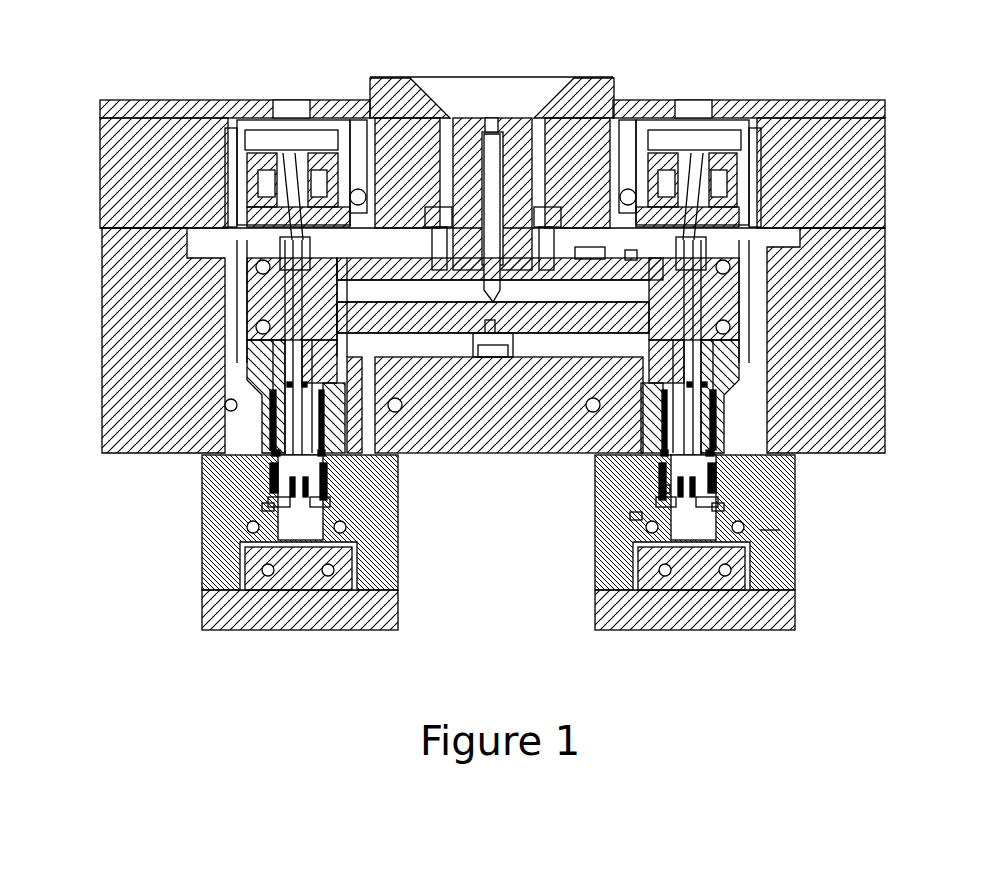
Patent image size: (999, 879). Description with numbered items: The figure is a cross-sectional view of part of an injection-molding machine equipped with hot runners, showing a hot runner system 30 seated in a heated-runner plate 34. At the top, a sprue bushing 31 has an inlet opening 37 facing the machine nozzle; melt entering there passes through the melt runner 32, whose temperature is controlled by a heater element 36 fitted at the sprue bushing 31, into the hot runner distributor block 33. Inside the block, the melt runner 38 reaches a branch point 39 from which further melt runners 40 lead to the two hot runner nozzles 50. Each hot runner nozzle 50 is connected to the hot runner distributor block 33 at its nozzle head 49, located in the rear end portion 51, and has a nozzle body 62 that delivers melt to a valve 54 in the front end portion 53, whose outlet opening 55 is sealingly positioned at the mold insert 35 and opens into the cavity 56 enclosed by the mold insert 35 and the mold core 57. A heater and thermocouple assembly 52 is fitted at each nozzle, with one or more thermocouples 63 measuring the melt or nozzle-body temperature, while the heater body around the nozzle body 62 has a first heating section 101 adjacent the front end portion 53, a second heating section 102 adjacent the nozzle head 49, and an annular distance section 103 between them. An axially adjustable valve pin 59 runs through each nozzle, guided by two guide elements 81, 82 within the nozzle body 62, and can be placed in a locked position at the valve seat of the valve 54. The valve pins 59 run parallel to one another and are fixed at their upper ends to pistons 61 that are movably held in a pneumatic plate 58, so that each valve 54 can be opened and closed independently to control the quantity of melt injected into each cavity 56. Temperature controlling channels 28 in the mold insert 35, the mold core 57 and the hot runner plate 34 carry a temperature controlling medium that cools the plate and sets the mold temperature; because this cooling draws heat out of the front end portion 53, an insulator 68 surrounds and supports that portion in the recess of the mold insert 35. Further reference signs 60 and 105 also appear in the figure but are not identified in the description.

The temperature controlling channels 28 is at (330, 568).
The hot runner system 30 is at (762, 252).
The sprue bushing 31 is at (460, 150).
The melt runner 32 is at (625, 132).
The hot runner distributor block 33 is at (730, 293).
The heated-runner plate 34 is at (140, 352).
The mold insert 35 is at (222, 518).
The heater element 36 is at (497, 185).
The inlet opening 37 is at (494, 112).
The melt runner 38 is at (350, 263).
The branch point 39 is at (485, 301).
The melt runners 40 is at (340, 292).
The nozzle heads 49 is at (740, 356).
The hot runner nozzles 50 is at (745, 385).
The rear end portion 51 is at (247, 387).
The heater and thermocouple assembly 52 is at (705, 474).
The front end portion 53 is at (264, 506).
The valve 54 is at (250, 564).
The outlet opening 55 is at (643, 546).
The cavity 56 is at (243, 568).
The mold core 57 is at (225, 613).
The pneumatic plate 58 is at (860, 150).
The valve pin 59 is at (800, 533).
The left bearing unit 60 is at (250, 155).
The pistons 61 is at (720, 160).
The nozzle body 62 is at (700, 442).
The thermocouples 63 is at (705, 513).
The insulator 68 is at (640, 517).
The guide element 81 is at (245, 362).
The guide element 82 is at (700, 520).
The first heating section 101 is at (700, 501).
The second heating section 102 is at (265, 441).
The distance section 103 is at (270, 461).
The sleeve 105 is at (660, 490).